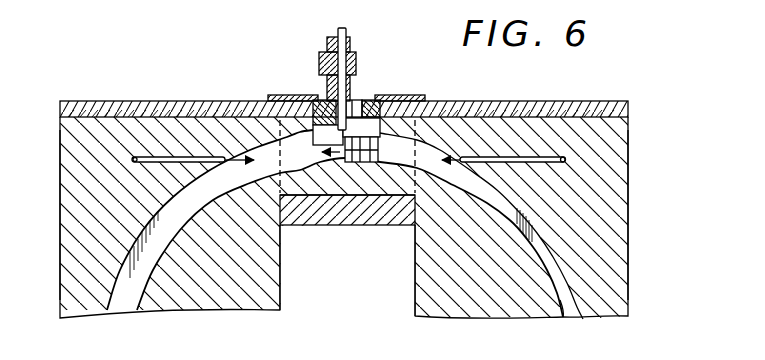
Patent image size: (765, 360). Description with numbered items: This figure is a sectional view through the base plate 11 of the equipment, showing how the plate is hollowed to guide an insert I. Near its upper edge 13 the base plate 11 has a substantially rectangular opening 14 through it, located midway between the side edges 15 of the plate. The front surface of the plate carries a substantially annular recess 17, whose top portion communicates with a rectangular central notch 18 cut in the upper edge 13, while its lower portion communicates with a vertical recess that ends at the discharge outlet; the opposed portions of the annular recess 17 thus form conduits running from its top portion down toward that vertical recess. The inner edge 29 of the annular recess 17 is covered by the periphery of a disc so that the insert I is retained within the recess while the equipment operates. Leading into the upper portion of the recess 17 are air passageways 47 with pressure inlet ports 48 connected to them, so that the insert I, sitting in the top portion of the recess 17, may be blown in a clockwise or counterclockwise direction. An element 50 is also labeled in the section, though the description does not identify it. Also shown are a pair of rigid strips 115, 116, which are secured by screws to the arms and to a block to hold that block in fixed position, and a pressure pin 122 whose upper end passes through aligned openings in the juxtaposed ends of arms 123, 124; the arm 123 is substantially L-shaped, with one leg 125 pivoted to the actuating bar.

The base plate 11 is at (628, 210).
The upper edge 13 is at (605, 122).
The rectangular opening 14 is at (332, 302).
The side edges 15 is at (60, 162).
The annular recess 17 is at (585, 319).
The central notch 18 is at (326, 100).
The inner edge of annular recess 29 is at (567, 318).
The air passageway 47 is at (528, 157).
The pressure inlet port 48 is at (565, 163).
The center plate 50 is at (355, 226).
The rigid strip 115 is at (275, 96).
The rigid strip 116 is at (411, 96).
The pressure pin 122 is at (346, 32).
The arm 123 is at (317, 50).
The arm 124 is at (357, 63).
The leg of arm 125 is at (351, 86).
The insert I is at (383, 150).